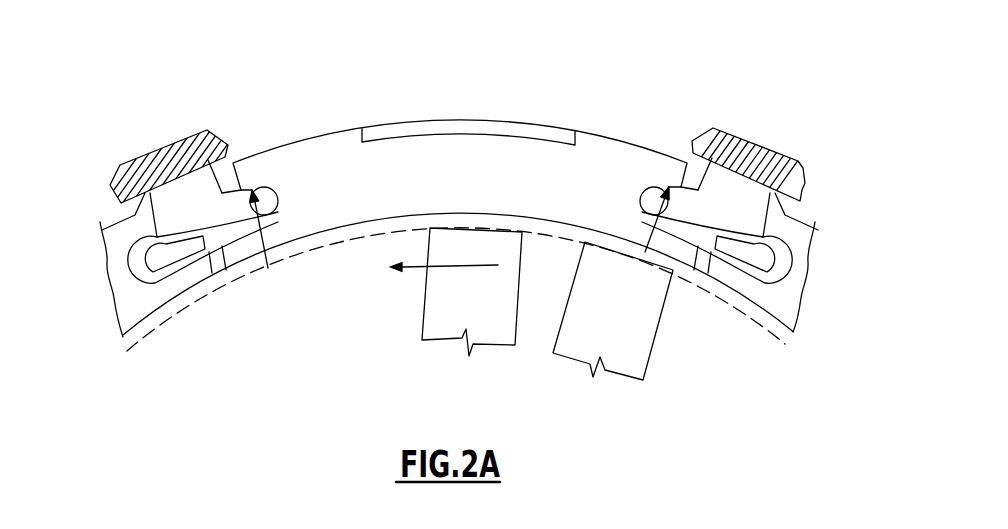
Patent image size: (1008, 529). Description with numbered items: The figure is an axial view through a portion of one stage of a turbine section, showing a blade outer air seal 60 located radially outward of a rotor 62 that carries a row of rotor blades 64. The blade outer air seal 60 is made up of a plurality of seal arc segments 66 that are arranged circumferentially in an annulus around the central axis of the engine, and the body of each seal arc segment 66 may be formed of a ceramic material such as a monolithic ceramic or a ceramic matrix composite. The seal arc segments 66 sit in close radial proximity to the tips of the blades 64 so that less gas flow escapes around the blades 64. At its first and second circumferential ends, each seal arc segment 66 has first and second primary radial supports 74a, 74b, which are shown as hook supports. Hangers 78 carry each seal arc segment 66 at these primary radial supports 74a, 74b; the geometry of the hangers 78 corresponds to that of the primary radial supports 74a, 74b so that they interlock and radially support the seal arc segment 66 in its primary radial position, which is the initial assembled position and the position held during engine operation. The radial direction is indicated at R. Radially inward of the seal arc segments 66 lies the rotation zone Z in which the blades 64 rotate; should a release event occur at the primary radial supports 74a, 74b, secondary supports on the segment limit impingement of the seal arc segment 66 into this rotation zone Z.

The blade outer air seal 60 is at (270, 146).
The rotor 62 is at (396, 372).
The rotor blades 64 is at (430, 293).
The seal arc segments 66 is at (113, 224).
The first primary radial support 74a is at (648, 213).
The second primary radial support 74b is at (270, 219).
The hangers 78 is at (232, 150).
The radial direction R is at (265, 258).
The rotation zone Z is at (323, 250).